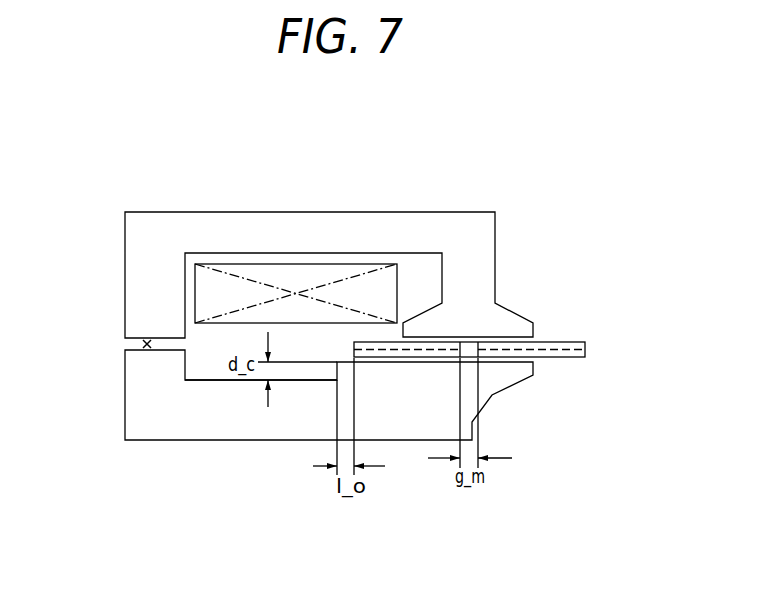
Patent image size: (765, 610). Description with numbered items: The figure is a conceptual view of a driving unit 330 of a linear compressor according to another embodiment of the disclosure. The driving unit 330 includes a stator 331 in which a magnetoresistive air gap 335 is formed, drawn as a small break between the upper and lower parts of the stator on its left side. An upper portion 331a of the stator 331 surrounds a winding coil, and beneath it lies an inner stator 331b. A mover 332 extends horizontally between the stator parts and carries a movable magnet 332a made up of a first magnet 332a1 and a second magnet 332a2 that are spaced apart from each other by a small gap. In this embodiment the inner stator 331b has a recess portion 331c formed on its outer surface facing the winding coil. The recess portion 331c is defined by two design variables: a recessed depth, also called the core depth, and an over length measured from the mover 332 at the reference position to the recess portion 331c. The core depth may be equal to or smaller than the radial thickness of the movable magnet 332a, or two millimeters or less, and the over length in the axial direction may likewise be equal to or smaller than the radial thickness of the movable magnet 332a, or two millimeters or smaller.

The driving unit 330 is at (347, 347).
The stator 331 is at (282, 323).
The upper yoke portion 331a is at (302, 224).
The inner stator 331b is at (276, 422).
The recess portion 331c is at (205, 381).
The magnetoresistive air gap 335 is at (142, 344).
The mover 332 is at (508, 434).
The movable magnet 332a is at (469, 453).
The first magnet 332a1 is at (415, 358).
The second magnet 332a2 is at (545, 358).